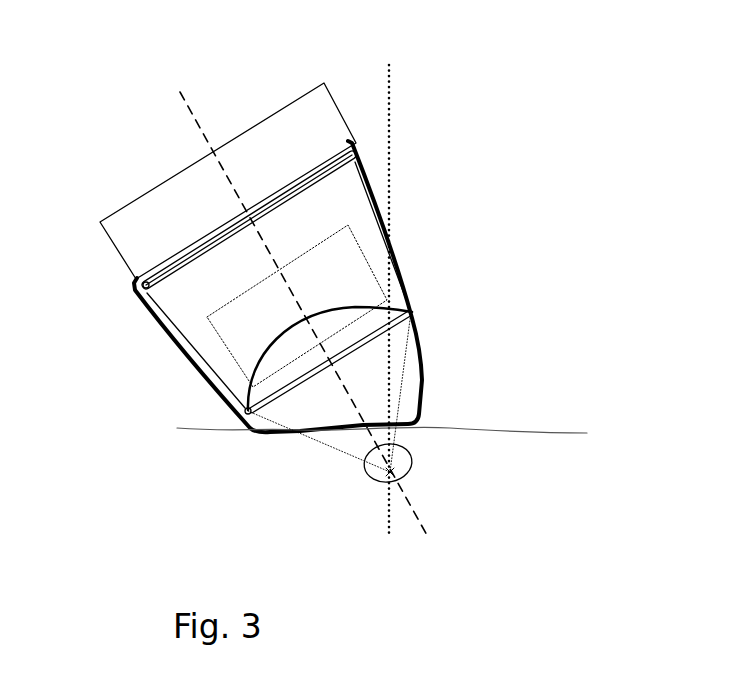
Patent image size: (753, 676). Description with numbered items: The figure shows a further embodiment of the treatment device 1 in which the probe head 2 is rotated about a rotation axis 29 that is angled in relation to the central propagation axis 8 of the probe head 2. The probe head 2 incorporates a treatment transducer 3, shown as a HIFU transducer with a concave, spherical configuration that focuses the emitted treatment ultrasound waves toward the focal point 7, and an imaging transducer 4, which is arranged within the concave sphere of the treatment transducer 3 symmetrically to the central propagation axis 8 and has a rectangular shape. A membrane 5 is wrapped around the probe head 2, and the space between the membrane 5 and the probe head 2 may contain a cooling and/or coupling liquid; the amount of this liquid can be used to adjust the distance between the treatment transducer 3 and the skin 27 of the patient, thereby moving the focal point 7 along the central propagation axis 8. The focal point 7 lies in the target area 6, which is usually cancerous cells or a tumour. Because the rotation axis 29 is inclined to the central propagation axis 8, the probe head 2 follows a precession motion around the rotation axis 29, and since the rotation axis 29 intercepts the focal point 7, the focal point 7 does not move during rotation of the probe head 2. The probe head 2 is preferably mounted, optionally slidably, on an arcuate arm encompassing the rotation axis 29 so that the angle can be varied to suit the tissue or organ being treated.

The treatment device 1 is at (112, 241).
The probe head 2 is at (373, 212).
The treatment transducer 3 is at (368, 306).
The imaging transducer 4 is at (235, 365).
The membrane 5 is at (175, 348).
The target area 6 is at (417, 462).
The focal point 7 is at (378, 478).
The central propagation axis 8 is at (190, 108).
The skin 27 is at (587, 433).
The rotation axis 29 is at (390, 76).